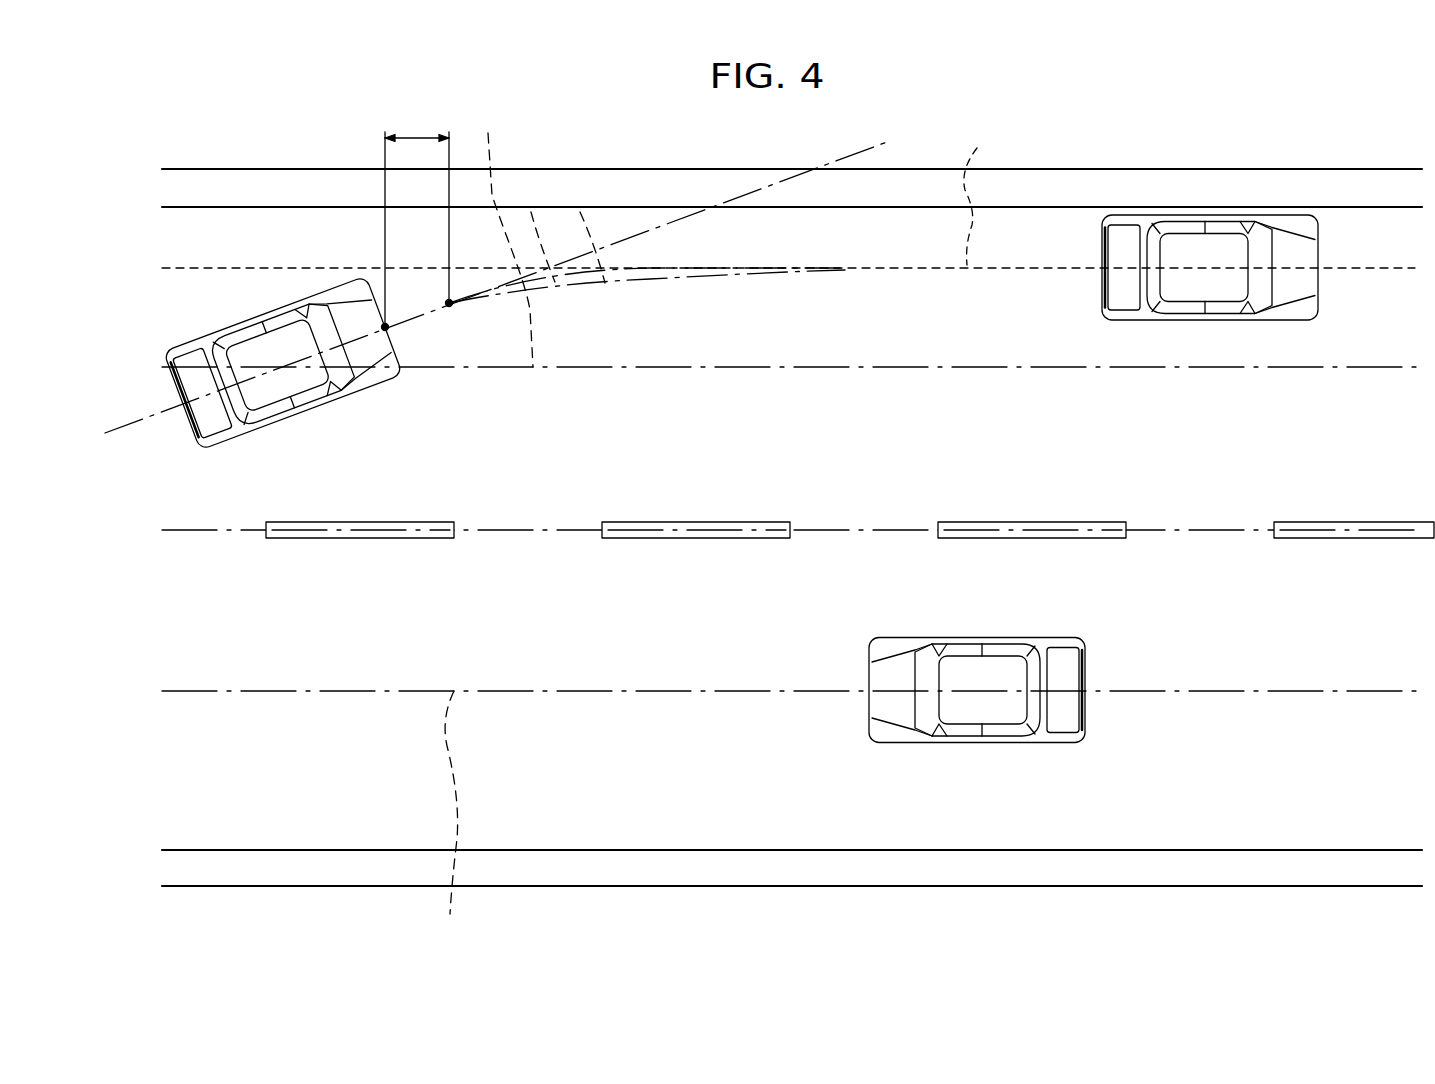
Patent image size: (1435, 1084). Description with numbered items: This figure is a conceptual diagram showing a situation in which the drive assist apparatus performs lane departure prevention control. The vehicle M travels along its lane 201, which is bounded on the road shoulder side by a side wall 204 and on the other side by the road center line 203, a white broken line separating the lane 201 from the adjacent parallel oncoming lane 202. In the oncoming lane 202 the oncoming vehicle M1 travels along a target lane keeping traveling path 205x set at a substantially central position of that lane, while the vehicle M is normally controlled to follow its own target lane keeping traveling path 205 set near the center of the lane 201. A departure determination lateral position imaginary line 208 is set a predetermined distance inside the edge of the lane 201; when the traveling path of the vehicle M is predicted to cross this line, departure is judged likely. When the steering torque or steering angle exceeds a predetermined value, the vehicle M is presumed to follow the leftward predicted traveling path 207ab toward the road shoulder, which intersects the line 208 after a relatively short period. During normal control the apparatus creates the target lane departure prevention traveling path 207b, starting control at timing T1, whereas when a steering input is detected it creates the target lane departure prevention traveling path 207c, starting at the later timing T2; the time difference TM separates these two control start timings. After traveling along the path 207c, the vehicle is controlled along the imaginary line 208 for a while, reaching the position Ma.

The lane 201 is at (190, 238).
The oncoming lane 202 is at (196, 818).
The road center line 203 is at (286, 534).
The side wall 204 is at (221, 187).
The target lane keeping traveling path 205 is at (501, 235).
The target lane keeping traveling path 205x is at (443, 820).
The predicted traveling path 207ab is at (783, 176).
The target lane departure prevention traveling path 207b is at (577, 205).
The target lane departure prevention traveling path 207c is at (531, 205).
The departure determination lateral position imaginary line 208 is at (978, 190).
The vehicle M is at (278, 347).
The position of the vehicle Ma is at (1217, 248).
The oncoming vehicle M1 is at (975, 713).
The time difference TM is at (417, 216).
The control start timing T1 is at (388, 328).
The control start timing T2 is at (452, 305).